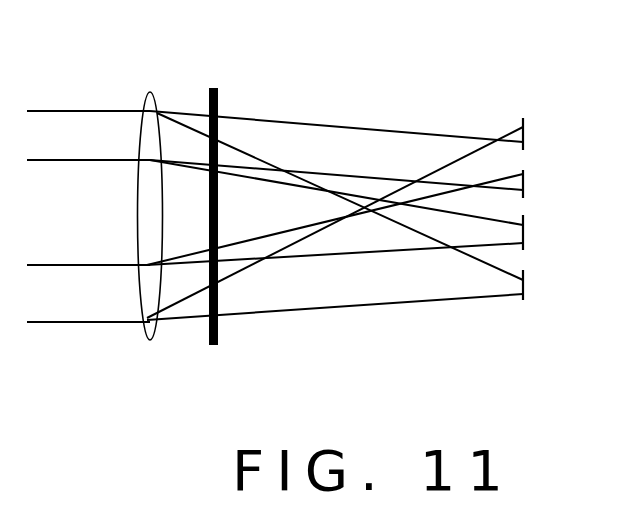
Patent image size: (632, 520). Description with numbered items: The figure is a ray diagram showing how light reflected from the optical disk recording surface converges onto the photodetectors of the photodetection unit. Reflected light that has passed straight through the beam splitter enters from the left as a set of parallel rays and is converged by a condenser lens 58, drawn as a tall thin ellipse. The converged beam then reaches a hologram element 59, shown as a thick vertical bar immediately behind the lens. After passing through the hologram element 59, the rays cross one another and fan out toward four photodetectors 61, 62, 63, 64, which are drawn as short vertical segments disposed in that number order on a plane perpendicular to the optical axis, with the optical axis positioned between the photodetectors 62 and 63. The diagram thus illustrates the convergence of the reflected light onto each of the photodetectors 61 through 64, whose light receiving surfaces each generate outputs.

The condenser lens 58 is at (151, 90).
The hologram element 59 is at (214, 88).
The photodetector 61 is at (524, 129).
The photodetector 62 is at (524, 180).
The photodetector 63 is at (524, 228).
The photodetector 64 is at (524, 281).